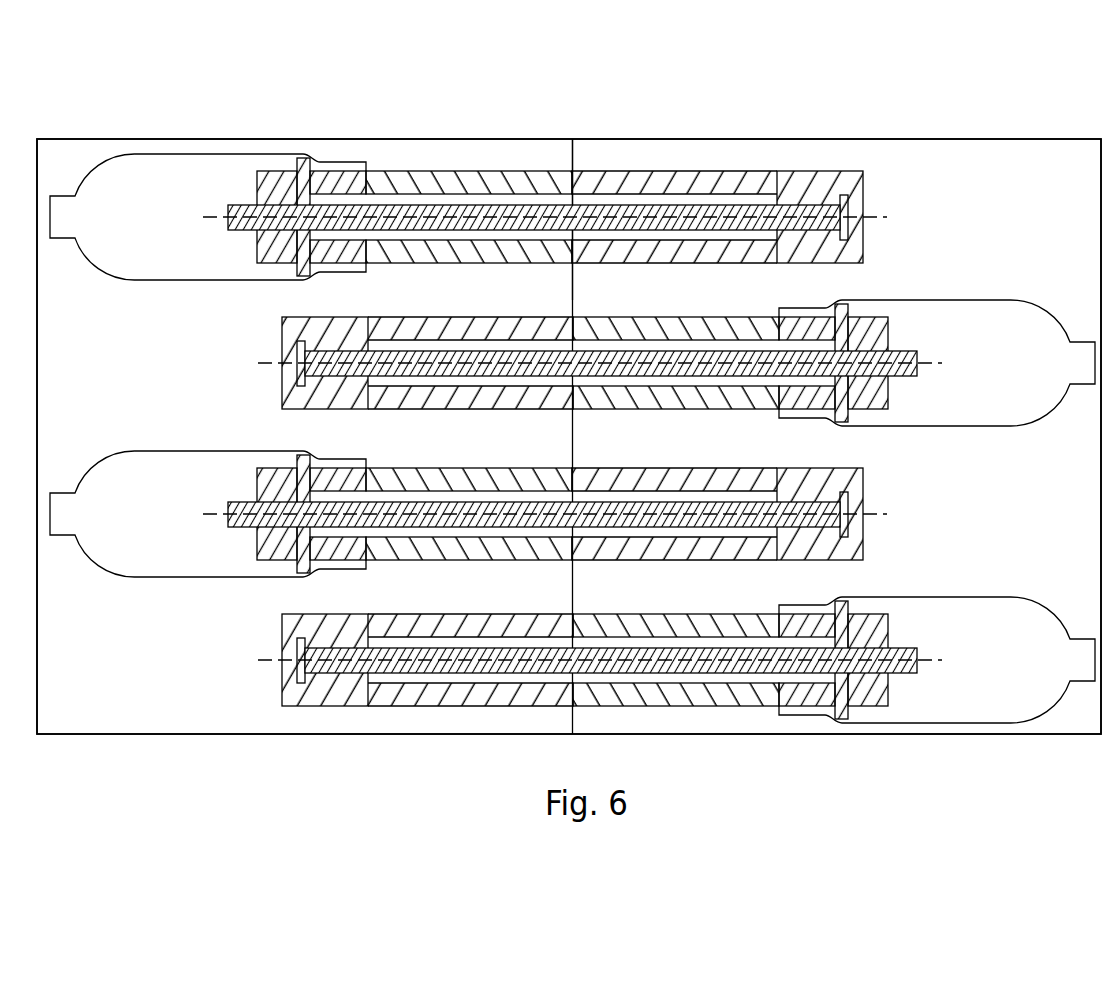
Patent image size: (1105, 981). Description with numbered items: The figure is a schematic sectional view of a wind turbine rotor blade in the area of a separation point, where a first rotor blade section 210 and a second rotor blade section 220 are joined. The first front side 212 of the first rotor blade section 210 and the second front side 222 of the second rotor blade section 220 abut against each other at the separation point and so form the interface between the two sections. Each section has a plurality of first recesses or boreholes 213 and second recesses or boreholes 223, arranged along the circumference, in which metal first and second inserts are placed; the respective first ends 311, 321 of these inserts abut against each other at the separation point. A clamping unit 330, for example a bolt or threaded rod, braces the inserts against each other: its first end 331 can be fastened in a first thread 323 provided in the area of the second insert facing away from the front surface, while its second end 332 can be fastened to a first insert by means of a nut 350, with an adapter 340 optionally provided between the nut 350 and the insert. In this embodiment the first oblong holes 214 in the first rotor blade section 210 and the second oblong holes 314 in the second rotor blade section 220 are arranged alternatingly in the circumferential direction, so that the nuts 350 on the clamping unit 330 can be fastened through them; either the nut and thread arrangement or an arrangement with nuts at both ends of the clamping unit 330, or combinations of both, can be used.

The first rotor blade section 210 is at (386, 139).
The second rotor blade section 220 is at (680, 139).
The first front side 212 is at (572, 156).
The second front side 222 is at (576, 156).
The first recesses or boreholes 213 is at (428, 158).
The second recesses or boreholes 223 is at (767, 168).
The first oblong hole 214 is at (157, 233).
The second oblong hole 314 is at (1009, 346).
The first end of first insert 311 is at (565, 330).
The first end of second insert 321 is at (580, 330).
The first thread 323 is at (805, 195).
The clamping unit 330 is at (250, 205).
The first end of bolt 331 is at (866, 228).
The second end of bolt 332 is at (228, 236).
The adapter 340 is at (310, 160).
The nut 350 is at (250, 183).